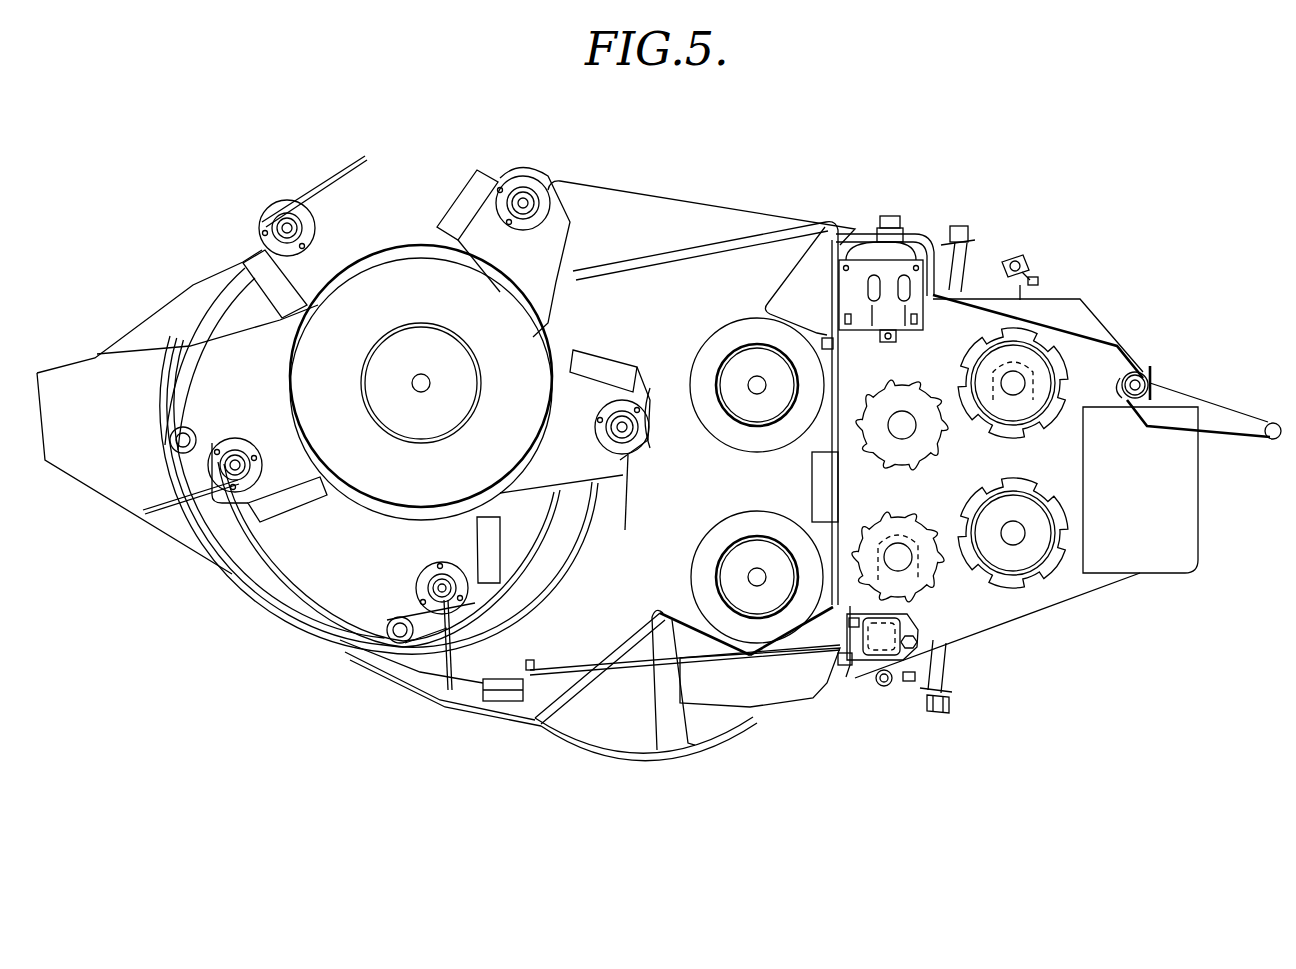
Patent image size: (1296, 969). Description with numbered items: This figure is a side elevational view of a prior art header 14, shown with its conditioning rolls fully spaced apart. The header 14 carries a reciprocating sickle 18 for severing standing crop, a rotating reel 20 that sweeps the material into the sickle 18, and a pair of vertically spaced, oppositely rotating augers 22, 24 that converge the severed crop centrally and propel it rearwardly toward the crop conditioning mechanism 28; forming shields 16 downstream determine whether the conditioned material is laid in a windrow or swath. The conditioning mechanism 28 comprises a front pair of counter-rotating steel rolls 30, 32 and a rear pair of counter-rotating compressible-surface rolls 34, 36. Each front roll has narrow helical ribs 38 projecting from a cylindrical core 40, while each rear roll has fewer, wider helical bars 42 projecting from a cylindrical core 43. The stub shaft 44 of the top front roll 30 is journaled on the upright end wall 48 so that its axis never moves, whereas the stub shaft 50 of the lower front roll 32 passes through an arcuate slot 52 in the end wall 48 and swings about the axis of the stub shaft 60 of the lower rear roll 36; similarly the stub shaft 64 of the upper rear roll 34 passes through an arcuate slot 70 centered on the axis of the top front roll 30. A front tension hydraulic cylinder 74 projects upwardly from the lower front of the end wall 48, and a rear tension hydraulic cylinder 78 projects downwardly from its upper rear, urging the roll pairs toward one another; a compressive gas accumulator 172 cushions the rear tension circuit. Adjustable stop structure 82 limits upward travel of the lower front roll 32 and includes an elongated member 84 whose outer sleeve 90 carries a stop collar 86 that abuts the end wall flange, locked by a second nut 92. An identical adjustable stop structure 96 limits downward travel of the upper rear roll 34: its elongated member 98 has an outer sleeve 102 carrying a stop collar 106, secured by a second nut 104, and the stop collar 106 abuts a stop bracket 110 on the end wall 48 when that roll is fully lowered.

The header 14 is at (710, 170).
The forming shields 16 is at (1230, 432).
The reciprocating sickle 18 is at (478, 712).
The rotating reel 20 is at (292, 197).
The auger 22 is at (708, 357).
The auger 24 is at (698, 586).
The crop conditioning mechanism 28 is at (1108, 305).
The top front conditioning roll 30 is at (932, 380).
The lower front conditioning roll 32 is at (945, 592).
The upper rear conditioning roll 34 is at (1068, 418).
The lower rear conditioning roll 36 is at (1080, 502).
The ribs 38 is at (945, 430).
The cylindrical core 40 is at (862, 408).
The bars 42 is at (1019, 437).
The cylindrical core 43 is at (1054, 422).
The stub shaft 44 is at (900, 426).
The upright end wall 48 is at (1108, 330).
The stub shaft 50 is at (900, 565).
The slot 52 is at (895, 512).
The stub shaft 60 is at (1016, 535).
The stub shaft 64 is at (1018, 384).
The slot 70 is at (1050, 400).
The tension hydraulic cylinder 74 is at (898, 682).
The tension hydraulic cylinder 78 is at (1022, 262).
The adjustable stop structure 82 is at (962, 715).
The elongated member 84 is at (940, 672).
The stop collar 86 is at (958, 682).
The outer elongated sleeve 90 is at (945, 668).
The second nut 92 is at (940, 710).
The adjustable stop structure 96 is at (968, 208).
The elongated member 98 is at (967, 265).
The outer sleeve 102 is at (943, 262).
The second nut 104 is at (955, 228).
The stop collar 106 is at (972, 247).
The stop bracket 110 is at (1033, 292).
The compressive gas accumulator 172 is at (868, 255).